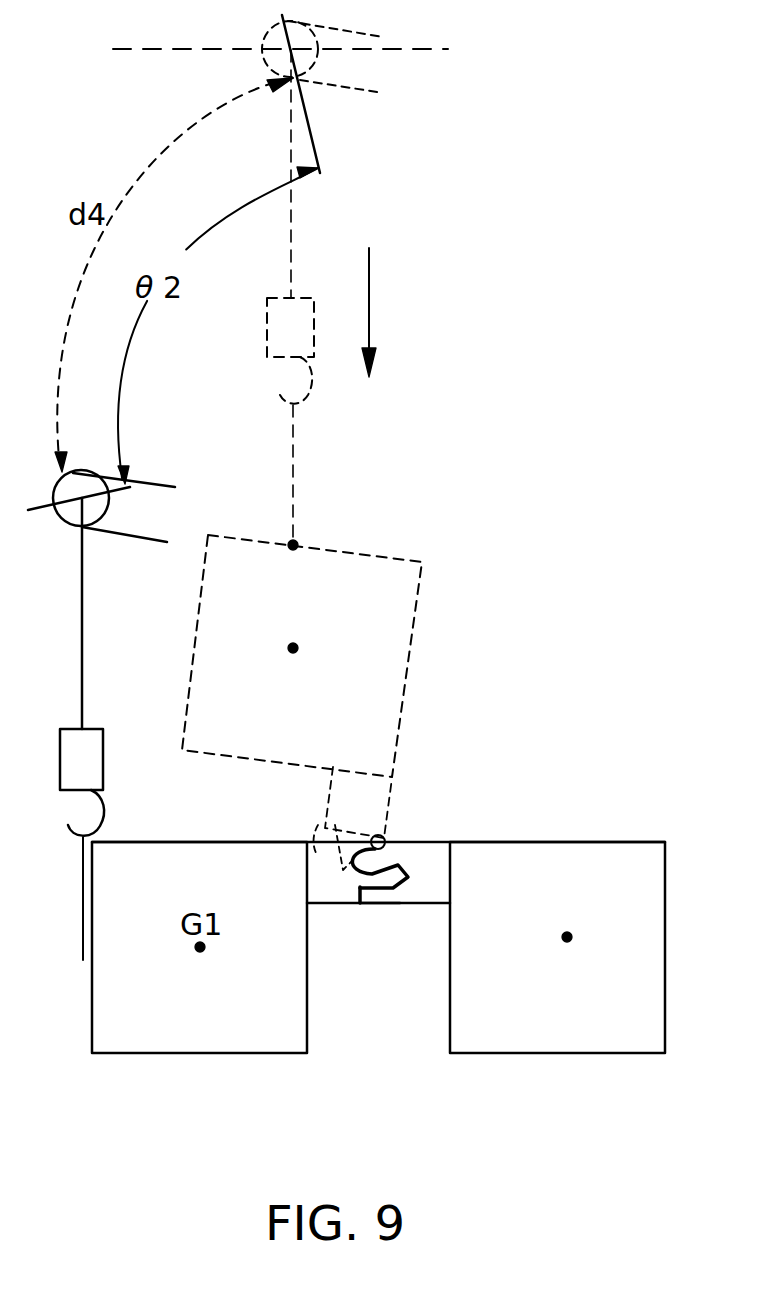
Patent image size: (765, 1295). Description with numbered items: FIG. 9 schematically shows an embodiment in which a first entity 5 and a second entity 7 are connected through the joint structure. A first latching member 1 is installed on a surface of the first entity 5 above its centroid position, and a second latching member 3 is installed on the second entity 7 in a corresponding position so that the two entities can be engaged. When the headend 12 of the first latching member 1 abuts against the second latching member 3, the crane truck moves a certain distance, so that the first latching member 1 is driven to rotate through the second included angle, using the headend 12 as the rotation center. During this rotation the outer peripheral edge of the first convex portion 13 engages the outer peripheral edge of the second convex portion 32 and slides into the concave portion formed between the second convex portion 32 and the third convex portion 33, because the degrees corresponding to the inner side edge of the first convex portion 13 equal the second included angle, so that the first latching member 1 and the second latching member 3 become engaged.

The first latching member 1 is at (322, 852).
The headend 12 is at (386, 841).
The first convex portion 13 is at (358, 880).
The second latching member 3 is at (433, 892).
The second convex portion 32 is at (388, 864).
The third convex portion 33 is at (377, 897).
The first entity 5 is at (163, 1037).
The second entity 7 is at (552, 1037).